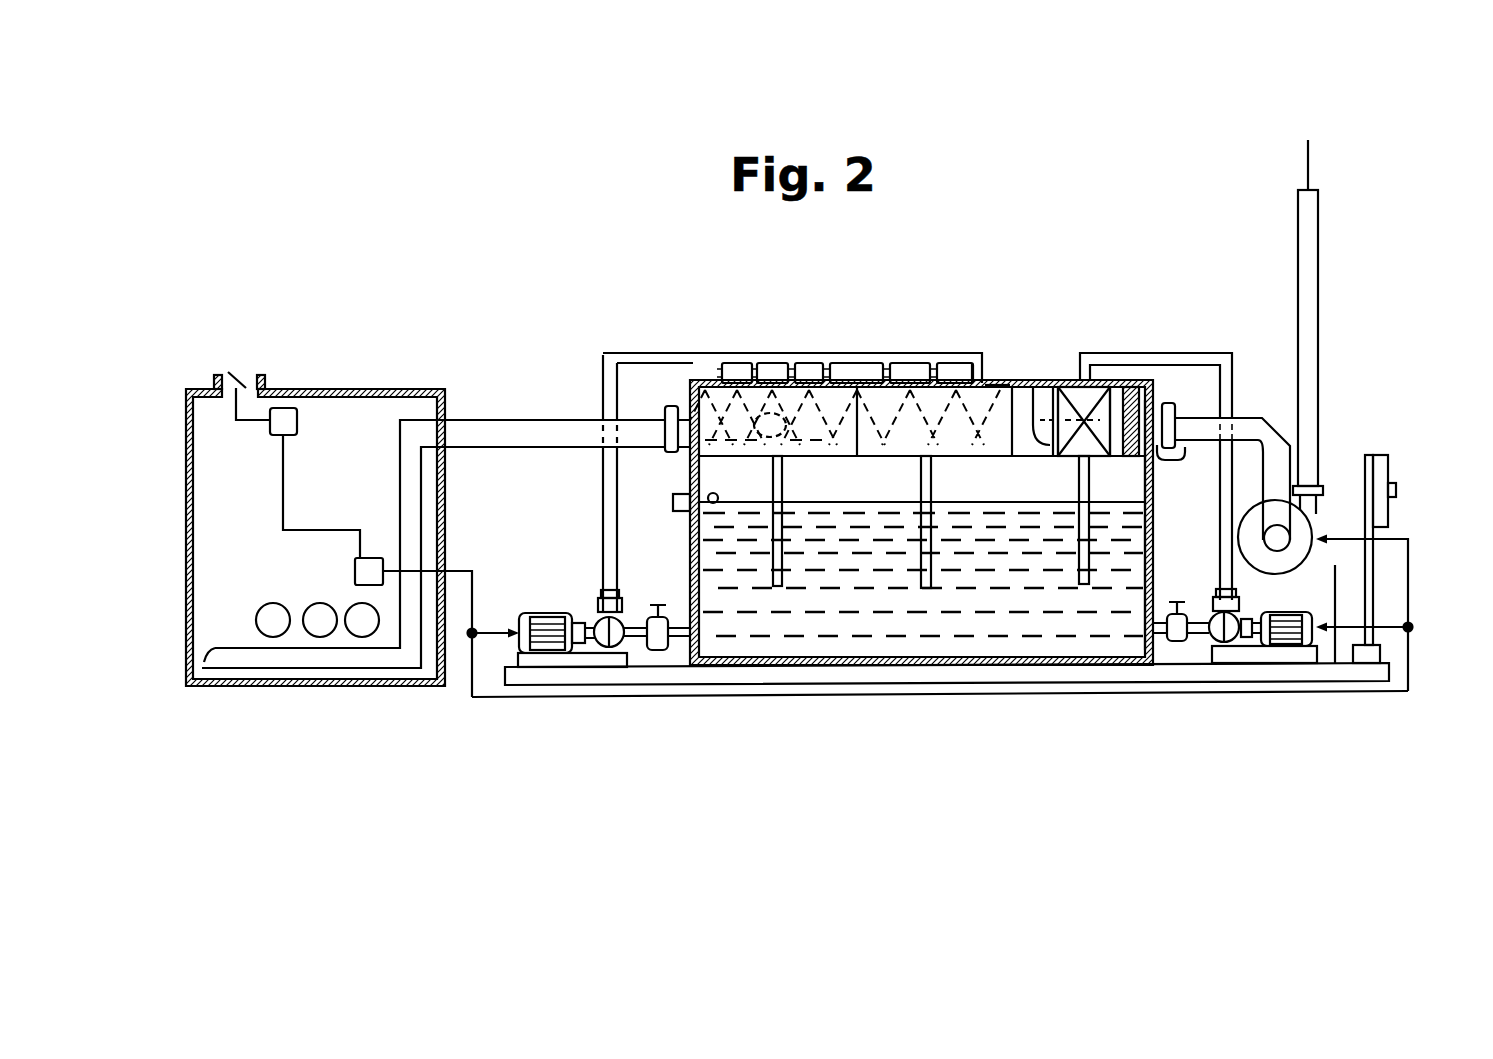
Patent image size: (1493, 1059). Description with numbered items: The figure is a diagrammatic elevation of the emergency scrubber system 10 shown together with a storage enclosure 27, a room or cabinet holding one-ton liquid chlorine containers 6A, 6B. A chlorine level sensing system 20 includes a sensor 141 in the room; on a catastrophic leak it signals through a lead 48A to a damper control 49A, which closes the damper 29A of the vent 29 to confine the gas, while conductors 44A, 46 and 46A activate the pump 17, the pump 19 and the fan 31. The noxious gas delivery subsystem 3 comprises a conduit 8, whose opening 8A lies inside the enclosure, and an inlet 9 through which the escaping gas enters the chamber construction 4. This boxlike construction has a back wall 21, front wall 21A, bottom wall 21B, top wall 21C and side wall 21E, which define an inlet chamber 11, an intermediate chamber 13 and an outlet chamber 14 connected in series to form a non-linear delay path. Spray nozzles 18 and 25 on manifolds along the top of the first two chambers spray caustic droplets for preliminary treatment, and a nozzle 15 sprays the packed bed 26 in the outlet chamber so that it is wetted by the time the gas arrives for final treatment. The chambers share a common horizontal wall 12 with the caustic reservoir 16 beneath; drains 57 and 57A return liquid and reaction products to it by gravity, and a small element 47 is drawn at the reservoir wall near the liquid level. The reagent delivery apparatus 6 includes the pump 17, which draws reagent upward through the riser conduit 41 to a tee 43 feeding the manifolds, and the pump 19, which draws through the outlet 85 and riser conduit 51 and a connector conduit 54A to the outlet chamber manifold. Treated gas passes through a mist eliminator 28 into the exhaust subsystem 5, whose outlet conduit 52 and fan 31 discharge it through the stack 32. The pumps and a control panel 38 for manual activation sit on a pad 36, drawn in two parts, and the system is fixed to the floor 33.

The emergency scrubber system 10 is at (455, 360).
The noxious gas delivery subsystem 3 is at (484, 398).
The conduit 8 is at (548, 420).
The opening or inlet 8A is at (210, 662).
The riser conduit 41 is at (577, 352).
The inlet 9 is at (690, 383).
The inlet chamber 11 is at (703, 378).
The top wall 21C is at (772, 378).
The spray nozzle 18 is at (798, 378).
The spray nozzle 25 is at (904, 378).
The side wall 21E is at (867, 378).
The intermediate chamber 13 is at (997, 378).
The chamber construction 4 is at (1017, 370).
The outlet conduit 52 is at (1027, 378).
The packed bed 26 is at (1063, 378).
The outlet chamber 14 is at (1033, 378).
The spray nozzle 15 is at (1097, 380).
The mist eliminator 28 is at (1130, 380).
The connector conduit 54A is at (1203, 352).
The stack 32 is at (1318, 330).
The exhaust subsystem 5 is at (1333, 432).
The fan 31 is at (1317, 518).
The control panel 38 is at (1388, 462).
The conductor 46A is at (1395, 540).
The pump 19 is at (1312, 612).
The conductor 46 is at (1395, 627).
The reagent delivery apparatus 6 is at (1210, 542).
The vent 29 is at (222, 378).
The damper 29A is at (237, 380).
The damper control 49A is at (283, 408).
The lead 48A is at (285, 470).
The common internal horizontal wall 12 is at (703, 463).
The drain 57 is at (770, 490).
The drain 57A is at (1077, 474).
The pump 17 is at (563, 612).
The chlorine level sensing system 20 is at (488, 556).
The enclosure 27 is at (185, 525).
The roller 6A is at (275, 638).
The roller 6B is at (322, 638).
The sensor 141 is at (372, 586).
The tee 43 is at (472, 700).
The conductor 44A is at (492, 636).
The pad 36 is at (565, 667).
The level sensor 47 is at (675, 508).
The caustic reservoir 16 is at (722, 568).
The back wall 21 is at (697, 652).
The floor 33 is at (740, 680).
The bottom wall 21B is at (960, 665).
The front wall 21A is at (1146, 657).
The outlet 85 is at (1170, 642).
The riser conduit 51 is at (1253, 655).